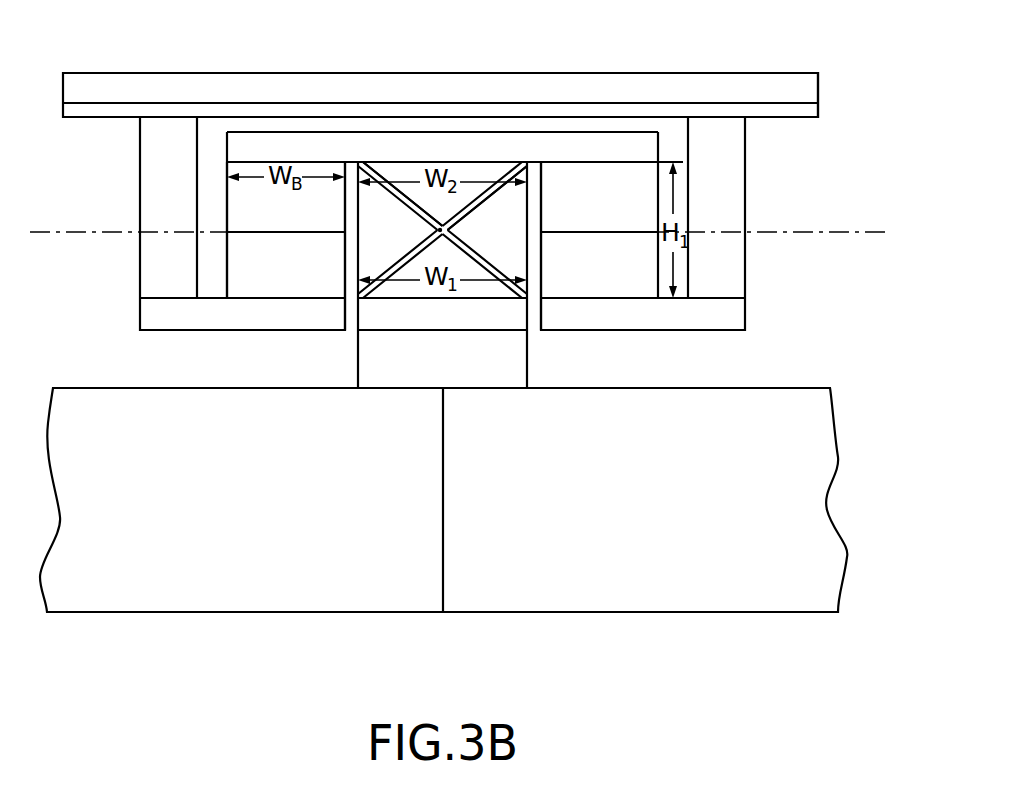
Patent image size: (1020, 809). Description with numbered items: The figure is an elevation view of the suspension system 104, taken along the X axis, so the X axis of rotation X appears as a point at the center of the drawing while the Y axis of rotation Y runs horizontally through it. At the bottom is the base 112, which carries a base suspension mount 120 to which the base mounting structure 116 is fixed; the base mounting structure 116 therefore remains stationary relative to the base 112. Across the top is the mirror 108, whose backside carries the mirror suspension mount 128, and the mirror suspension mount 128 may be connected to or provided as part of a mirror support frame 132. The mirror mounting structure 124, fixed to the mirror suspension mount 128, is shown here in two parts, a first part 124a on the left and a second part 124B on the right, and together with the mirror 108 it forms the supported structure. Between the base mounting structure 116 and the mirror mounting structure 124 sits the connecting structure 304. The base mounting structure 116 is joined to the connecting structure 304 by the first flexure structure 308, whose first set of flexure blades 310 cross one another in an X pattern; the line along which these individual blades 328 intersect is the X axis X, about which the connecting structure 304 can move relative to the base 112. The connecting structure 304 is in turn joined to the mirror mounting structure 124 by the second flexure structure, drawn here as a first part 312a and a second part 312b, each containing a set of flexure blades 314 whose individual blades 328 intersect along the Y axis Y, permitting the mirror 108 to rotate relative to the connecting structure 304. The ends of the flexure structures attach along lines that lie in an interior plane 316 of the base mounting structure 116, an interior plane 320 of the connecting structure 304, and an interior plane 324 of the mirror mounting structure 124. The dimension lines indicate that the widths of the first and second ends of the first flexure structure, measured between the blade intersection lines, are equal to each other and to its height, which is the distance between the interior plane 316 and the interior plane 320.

The suspension system 104 is at (227, 275).
The mirror 108 is at (146, 83).
The base 112 is at (770, 600).
The base mounting structure 116 is at (392, 317).
The base suspension mount 120 is at (527, 360).
The mirror mounting structure 124 is at (723, 318).
The first part of mirror mounting structure 124a is at (250, 322).
The second part of mirror mounting structure 124B is at (692, 318).
The mirror suspension mount 128 is at (160, 166).
The mirror support frame 132 is at (777, 110).
The connecting structure 304 is at (273, 148).
The first flexure structure 308 is at (510, 172).
The first set of flexure blades 310 is at (378, 183).
The first part of second flexure structure 312a is at (227, 243).
The second part of second flexure structure 312b is at (640, 193).
The first set of flexure blades of second flexure structure 314 is at (247, 200).
The interior plane of base mounting structure 316 is at (495, 293).
The interior plane of connecting structure 320 is at (563, 163).
The interior plane of mirror mounting structure 324 is at (641, 293).
The individual blades 328 is at (402, 188).
The X axis of rotation X is at (447, 230).
The Y axis of rotation Y is at (850, 232).